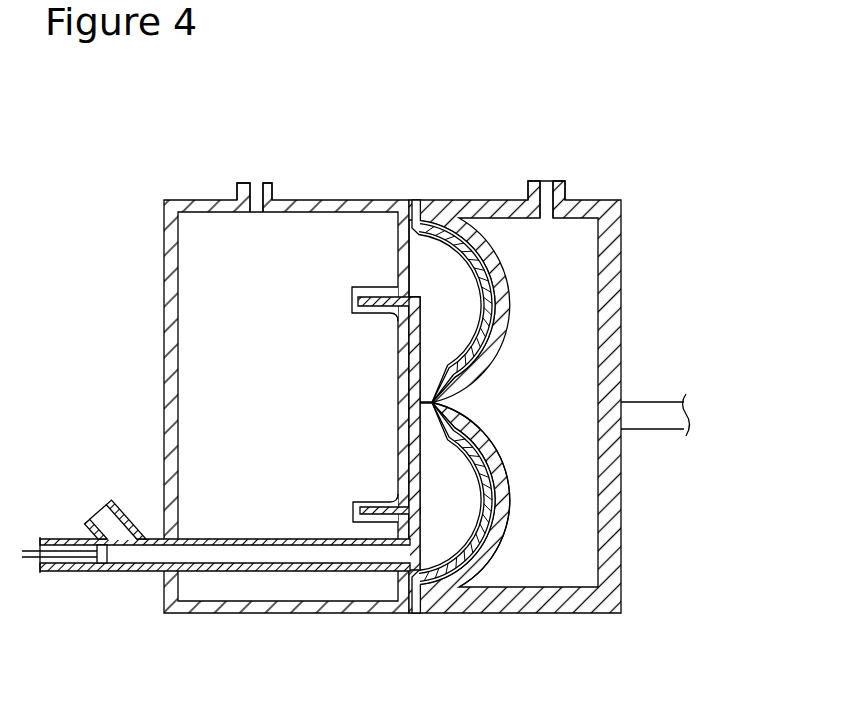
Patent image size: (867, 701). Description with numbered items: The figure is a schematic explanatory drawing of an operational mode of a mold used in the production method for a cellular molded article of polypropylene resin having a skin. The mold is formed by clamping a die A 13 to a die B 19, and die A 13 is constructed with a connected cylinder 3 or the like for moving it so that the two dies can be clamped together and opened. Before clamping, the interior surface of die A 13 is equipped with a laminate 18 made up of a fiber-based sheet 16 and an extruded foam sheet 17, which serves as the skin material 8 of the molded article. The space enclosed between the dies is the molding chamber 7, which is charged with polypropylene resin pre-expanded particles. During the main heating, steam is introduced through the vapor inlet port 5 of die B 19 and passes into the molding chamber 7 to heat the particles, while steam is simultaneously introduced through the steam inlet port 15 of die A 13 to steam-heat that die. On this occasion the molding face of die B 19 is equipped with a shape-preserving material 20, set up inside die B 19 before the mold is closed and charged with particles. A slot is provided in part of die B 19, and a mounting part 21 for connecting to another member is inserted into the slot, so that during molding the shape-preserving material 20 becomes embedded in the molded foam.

The cylinder 3 is at (658, 420).
The vapor inlet port 5 is at (254, 190).
The molding chamber 7 is at (445, 530).
The skin material 8 is at (128, 572).
The die A 13 is at (613, 263).
The steam inlet port 15 is at (550, 190).
The fiber-based sheet 16 is at (417, 200).
The extruded foam sheet 17 is at (415, 200).
The laminate 18 is at (382, 94).
The die B 19 is at (307, 204).
The shape-preserving material 20 is at (416, 373).
The mounting part 21 is at (377, 300).